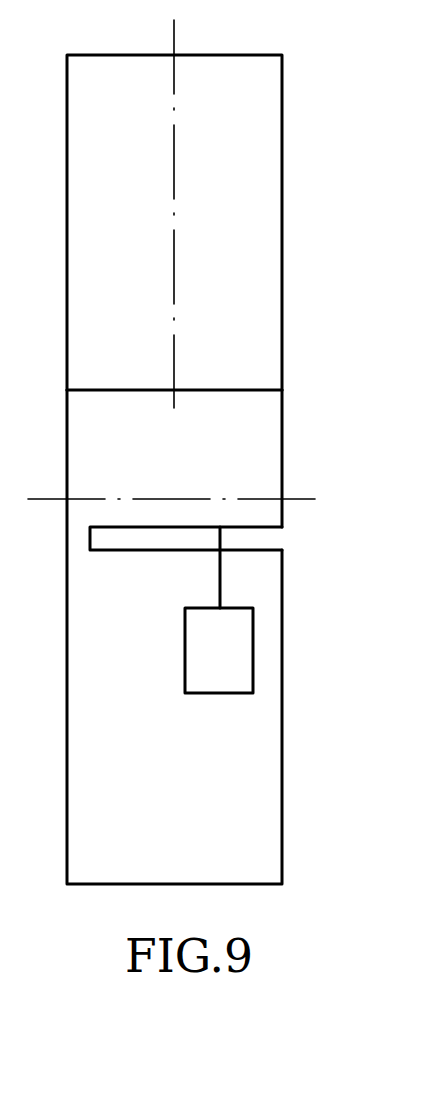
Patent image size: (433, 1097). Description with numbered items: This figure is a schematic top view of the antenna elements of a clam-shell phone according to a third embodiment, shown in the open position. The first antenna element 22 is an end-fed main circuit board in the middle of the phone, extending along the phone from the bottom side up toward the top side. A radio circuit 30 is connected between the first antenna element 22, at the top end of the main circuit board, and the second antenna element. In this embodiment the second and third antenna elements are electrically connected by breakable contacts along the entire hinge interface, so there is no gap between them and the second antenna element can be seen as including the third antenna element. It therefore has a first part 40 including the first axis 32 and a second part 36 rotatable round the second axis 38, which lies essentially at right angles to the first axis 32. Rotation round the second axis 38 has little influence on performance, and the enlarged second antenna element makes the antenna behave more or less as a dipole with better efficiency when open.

The first antenna element 22 is at (245, 781).
The radio circuit 30 is at (198, 664).
The first axis 32 is at (298, 497).
The second part 36 is at (245, 278).
The second axis 38 is at (176, 33).
The first part 40 is at (257, 413).